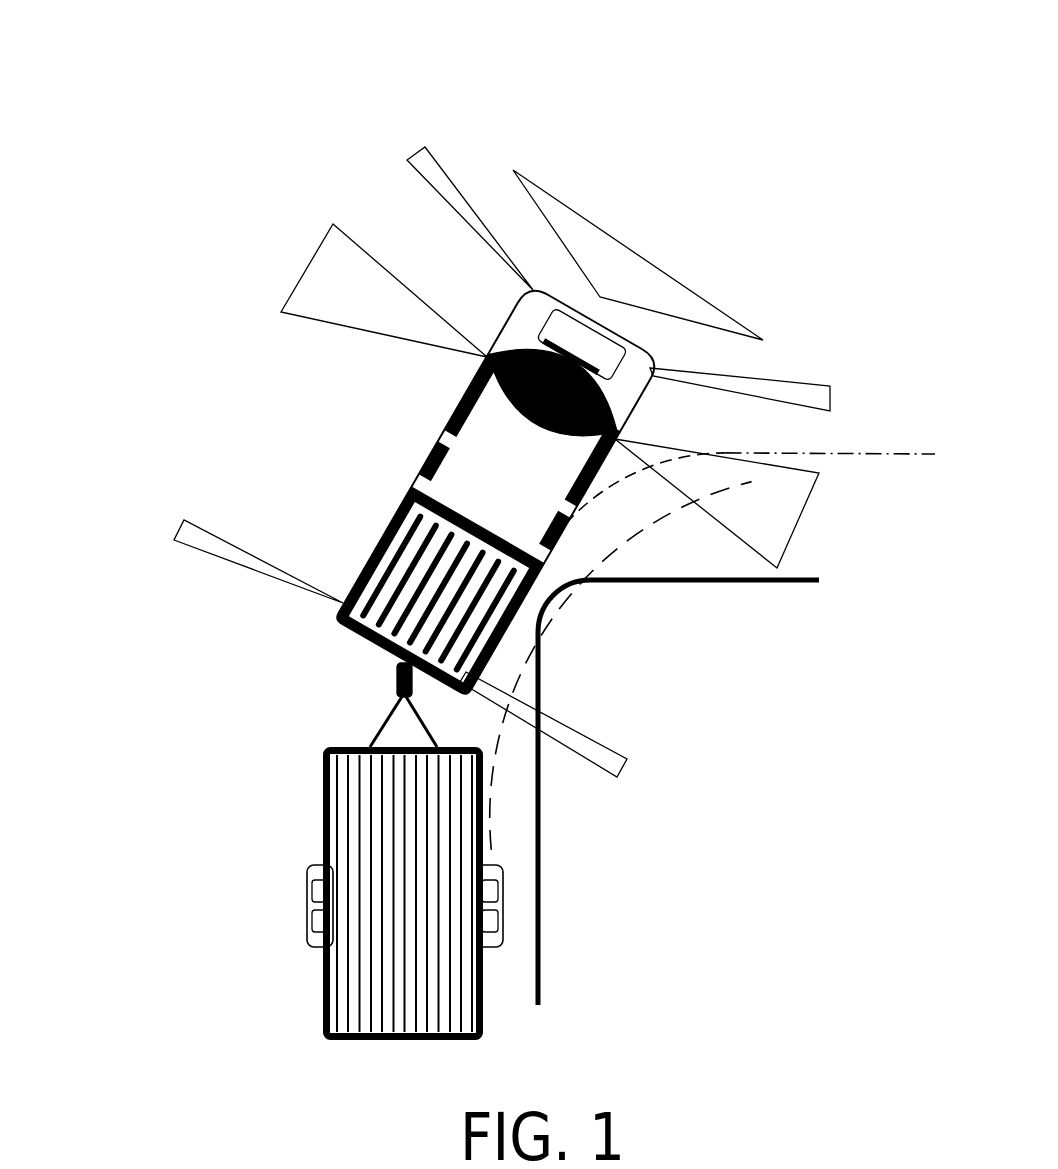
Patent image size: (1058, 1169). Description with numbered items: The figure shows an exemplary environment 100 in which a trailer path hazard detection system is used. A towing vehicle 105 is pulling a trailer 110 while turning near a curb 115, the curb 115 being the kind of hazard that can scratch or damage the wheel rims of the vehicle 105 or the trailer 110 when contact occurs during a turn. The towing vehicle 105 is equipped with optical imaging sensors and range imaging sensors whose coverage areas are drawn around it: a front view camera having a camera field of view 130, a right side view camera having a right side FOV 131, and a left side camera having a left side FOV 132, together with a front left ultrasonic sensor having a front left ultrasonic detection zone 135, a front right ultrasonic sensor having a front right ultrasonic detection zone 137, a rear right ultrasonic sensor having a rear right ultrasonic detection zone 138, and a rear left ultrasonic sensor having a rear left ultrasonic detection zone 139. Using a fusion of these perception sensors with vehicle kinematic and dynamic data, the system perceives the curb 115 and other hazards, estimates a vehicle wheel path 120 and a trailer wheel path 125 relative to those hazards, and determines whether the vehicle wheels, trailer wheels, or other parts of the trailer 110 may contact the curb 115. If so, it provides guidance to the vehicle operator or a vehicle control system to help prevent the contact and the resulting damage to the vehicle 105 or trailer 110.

The environment 100 is at (602, 37).
The towing vehicle 105 is at (373, 451).
The trailer 110 is at (296, 906).
The curb 115 is at (554, 827).
The vehicle wheel path 120 is at (933, 437).
The trailer wheel path 125 is at (515, 776).
The camera field of view 130 is at (699, 282).
The right side FOV 131 is at (818, 527).
The left side FOV 132 is at (299, 259).
The front left ultrasonic detection zone 135 is at (462, 149).
The front right ultrasonic detection zone 137 is at (796, 356).
The rear right ultrasonic detection zone 138 is at (622, 738).
The rear left ultrasonic detection zone 139 is at (150, 514).